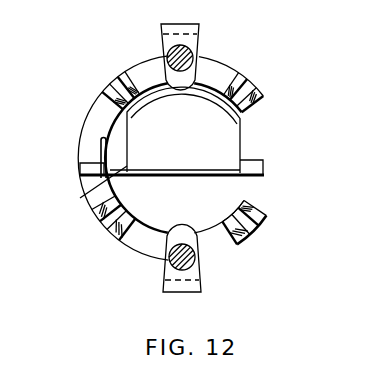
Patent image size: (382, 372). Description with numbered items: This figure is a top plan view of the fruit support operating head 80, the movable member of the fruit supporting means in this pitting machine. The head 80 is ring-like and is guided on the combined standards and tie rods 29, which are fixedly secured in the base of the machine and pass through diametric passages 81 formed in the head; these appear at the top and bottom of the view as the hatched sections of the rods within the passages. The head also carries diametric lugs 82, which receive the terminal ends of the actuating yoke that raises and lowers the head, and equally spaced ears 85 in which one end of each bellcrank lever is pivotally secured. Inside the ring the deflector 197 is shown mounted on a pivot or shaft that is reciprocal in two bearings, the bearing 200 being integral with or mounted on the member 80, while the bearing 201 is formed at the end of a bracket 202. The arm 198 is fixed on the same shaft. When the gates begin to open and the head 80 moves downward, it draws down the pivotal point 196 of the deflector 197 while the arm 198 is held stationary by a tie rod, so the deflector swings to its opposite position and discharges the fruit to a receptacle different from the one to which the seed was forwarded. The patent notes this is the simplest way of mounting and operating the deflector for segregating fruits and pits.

The combined standards and tie rods 29 is at (177, 60).
The fruit support-operating head 80 is at (95, 218).
The diametric passages 81 is at (197, 56).
The diametric lugs 82 is at (162, 40).
The ears 85 is at (260, 91).
The pivotal point 196 is at (80, 198).
The deflector 197 is at (220, 139).
The arm 198 is at (101, 143).
The bearing 200 is at (85, 170).
The bearing 201 is at (254, 167).
The bracket 202 is at (230, 176).